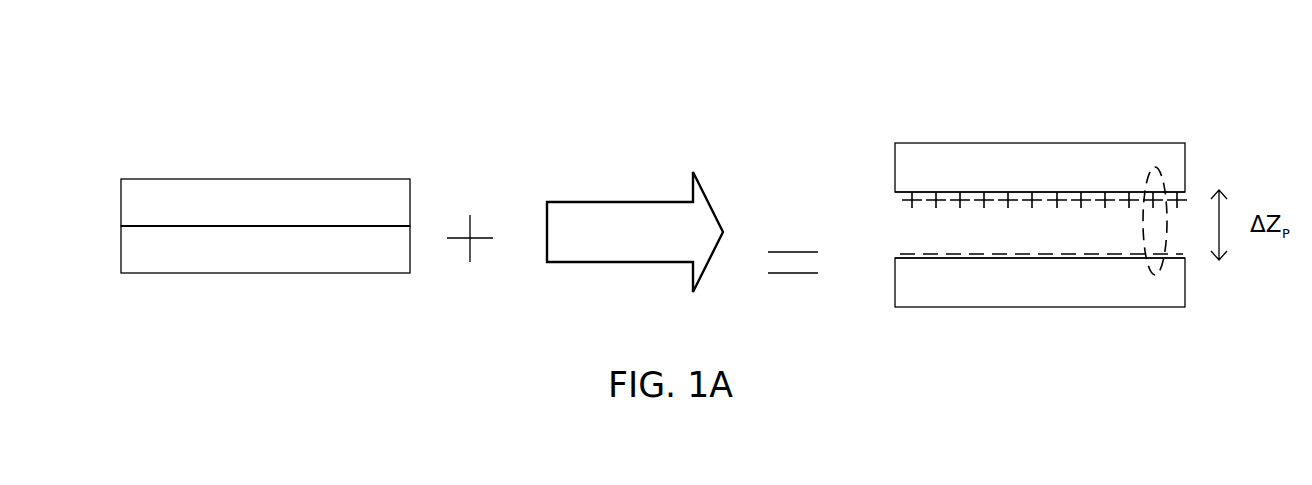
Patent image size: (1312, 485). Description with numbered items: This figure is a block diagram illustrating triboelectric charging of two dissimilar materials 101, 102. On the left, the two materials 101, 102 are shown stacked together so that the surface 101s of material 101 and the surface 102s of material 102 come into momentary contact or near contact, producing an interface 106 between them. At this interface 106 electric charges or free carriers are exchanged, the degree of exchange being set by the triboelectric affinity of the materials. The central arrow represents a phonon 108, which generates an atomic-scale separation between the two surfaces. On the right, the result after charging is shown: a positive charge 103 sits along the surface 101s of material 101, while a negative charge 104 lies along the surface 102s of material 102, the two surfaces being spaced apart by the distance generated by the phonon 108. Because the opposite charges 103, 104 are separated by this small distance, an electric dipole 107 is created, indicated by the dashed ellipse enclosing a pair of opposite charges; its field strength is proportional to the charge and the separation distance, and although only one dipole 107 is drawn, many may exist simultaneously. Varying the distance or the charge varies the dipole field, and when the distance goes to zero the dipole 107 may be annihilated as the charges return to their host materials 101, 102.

The material 101 is at (297, 179).
The surface of material 101 101s is at (180, 226).
The material 102 is at (225, 273).
The surface of material 102 102s is at (340, 227).
The interface 106 is at (298, 226).
The phonon 108 is at (612, 202).
The positive charge 103 is at (975, 198).
The negative charge 104 is at (952, 257).
The electric dipole 107 is at (1148, 167).